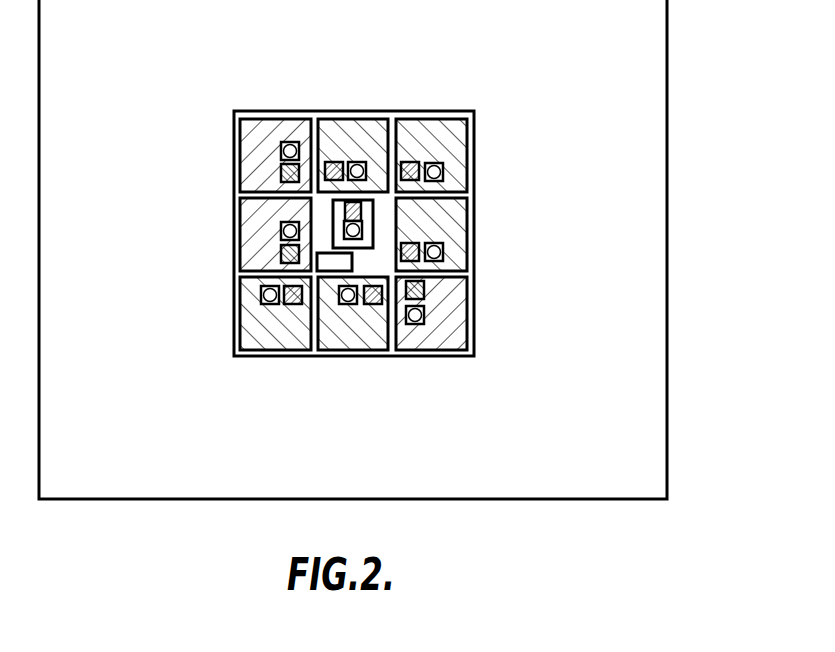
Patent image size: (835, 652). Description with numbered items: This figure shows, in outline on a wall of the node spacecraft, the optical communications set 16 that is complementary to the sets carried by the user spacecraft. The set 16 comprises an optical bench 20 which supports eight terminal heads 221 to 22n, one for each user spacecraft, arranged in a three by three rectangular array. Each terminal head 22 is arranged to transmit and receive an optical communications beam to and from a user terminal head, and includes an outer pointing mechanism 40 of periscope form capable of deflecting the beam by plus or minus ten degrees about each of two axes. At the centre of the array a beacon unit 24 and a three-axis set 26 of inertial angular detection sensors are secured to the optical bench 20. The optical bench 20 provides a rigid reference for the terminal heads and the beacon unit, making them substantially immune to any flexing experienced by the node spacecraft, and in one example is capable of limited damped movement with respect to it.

The optical communications set 16 is at (628, 388).
The optical bench 20 is at (470, 272).
The terminal head 22 is at (359, 237).
The first terminal head 221 is at (246, 143).
The nth terminal head 22n is at (462, 337).
The beacon unit 24 is at (351, 231).
The three-axis set of inertial angular detection sensors 26 is at (327, 263).
The outer pointing mechanism 40 is at (358, 167).